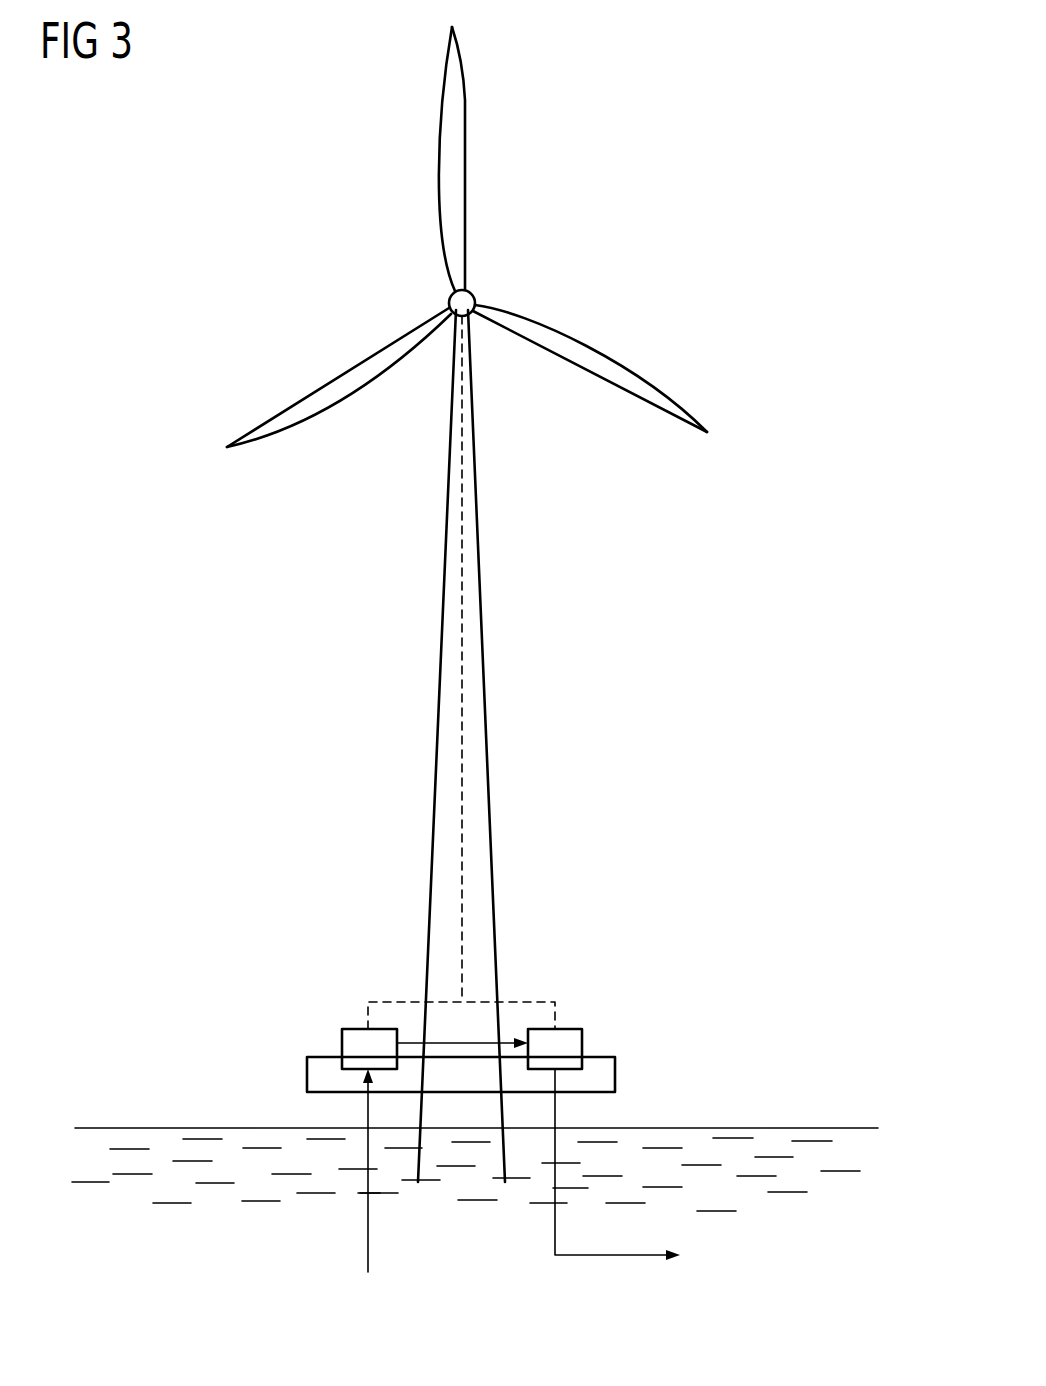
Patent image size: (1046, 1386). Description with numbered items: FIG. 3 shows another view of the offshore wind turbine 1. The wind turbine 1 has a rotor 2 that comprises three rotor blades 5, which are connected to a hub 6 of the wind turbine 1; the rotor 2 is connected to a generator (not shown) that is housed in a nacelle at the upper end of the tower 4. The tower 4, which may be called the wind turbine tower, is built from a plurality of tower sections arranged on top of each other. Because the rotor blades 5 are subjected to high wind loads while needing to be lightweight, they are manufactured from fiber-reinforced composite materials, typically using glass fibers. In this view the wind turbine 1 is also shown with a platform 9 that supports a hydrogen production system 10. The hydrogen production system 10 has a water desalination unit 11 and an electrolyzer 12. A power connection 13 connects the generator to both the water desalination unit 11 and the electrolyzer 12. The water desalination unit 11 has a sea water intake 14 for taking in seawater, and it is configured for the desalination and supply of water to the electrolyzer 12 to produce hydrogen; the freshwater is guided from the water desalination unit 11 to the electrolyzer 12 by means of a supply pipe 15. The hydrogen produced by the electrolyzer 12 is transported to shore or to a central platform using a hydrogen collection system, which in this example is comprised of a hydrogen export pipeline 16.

The wind turbine 1 is at (590, 117).
The rotor 2 is at (307, 387).
The tower 4 is at (485, 655).
The rotor blade 5 is at (465, 155).
The hub 6 is at (477, 295).
The platform 9 is at (615, 1073).
The hydrogen production system 10 is at (462, 1183).
The water desalination unit 11 is at (384, 1069).
The electrolyzer 12 is at (545, 1069).
The power connection 13 is at (542, 1002).
The sea water intake 14 is at (368, 1243).
The supply pipe 15 is at (412, 1040).
The hydrogen export pipeline 16 is at (613, 1258).